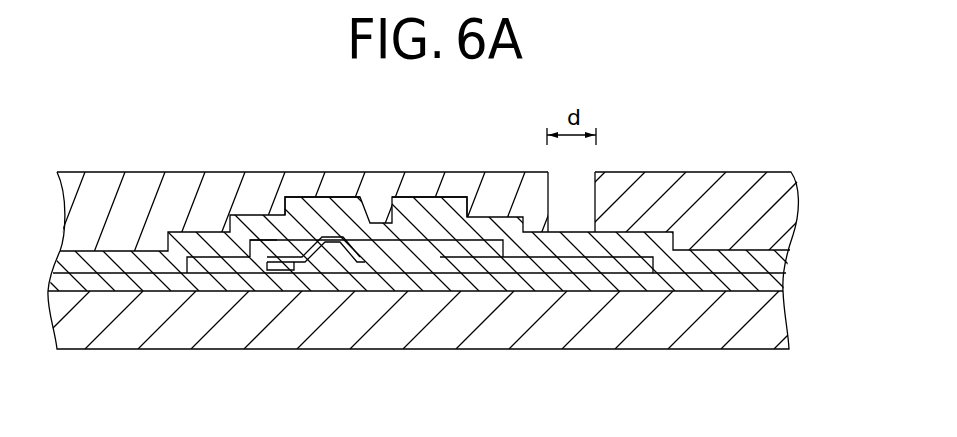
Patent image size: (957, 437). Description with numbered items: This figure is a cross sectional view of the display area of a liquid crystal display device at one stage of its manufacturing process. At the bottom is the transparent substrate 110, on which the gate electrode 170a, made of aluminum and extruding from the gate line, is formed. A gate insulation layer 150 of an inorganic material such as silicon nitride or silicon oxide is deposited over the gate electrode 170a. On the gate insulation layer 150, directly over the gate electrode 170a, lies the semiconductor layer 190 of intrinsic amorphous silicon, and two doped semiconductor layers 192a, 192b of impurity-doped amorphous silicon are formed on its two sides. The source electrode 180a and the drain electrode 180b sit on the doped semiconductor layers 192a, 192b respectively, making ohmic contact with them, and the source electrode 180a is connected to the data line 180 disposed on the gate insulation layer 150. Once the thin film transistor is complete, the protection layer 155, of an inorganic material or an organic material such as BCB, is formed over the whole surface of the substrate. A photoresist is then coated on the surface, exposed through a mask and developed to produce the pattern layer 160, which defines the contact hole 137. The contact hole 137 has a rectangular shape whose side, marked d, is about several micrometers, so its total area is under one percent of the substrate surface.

The transparent substrate 110 is at (727, 346).
The contact hole 137 is at (583, 200).
The gate insulation layer 150 is at (589, 287).
The protection layer 155 is at (105, 268).
The pattern layer 160 is at (729, 172).
The gate electrode 170a is at (363, 262).
The data line 180 is at (203, 264).
The source electrode 180a is at (332, 235).
The drain electrode 180b is at (412, 232).
The semiconductor layer 190 is at (308, 270).
The doped semiconductor layer 192a is at (266, 242).
The doped semiconductor layer 192b is at (470, 259).